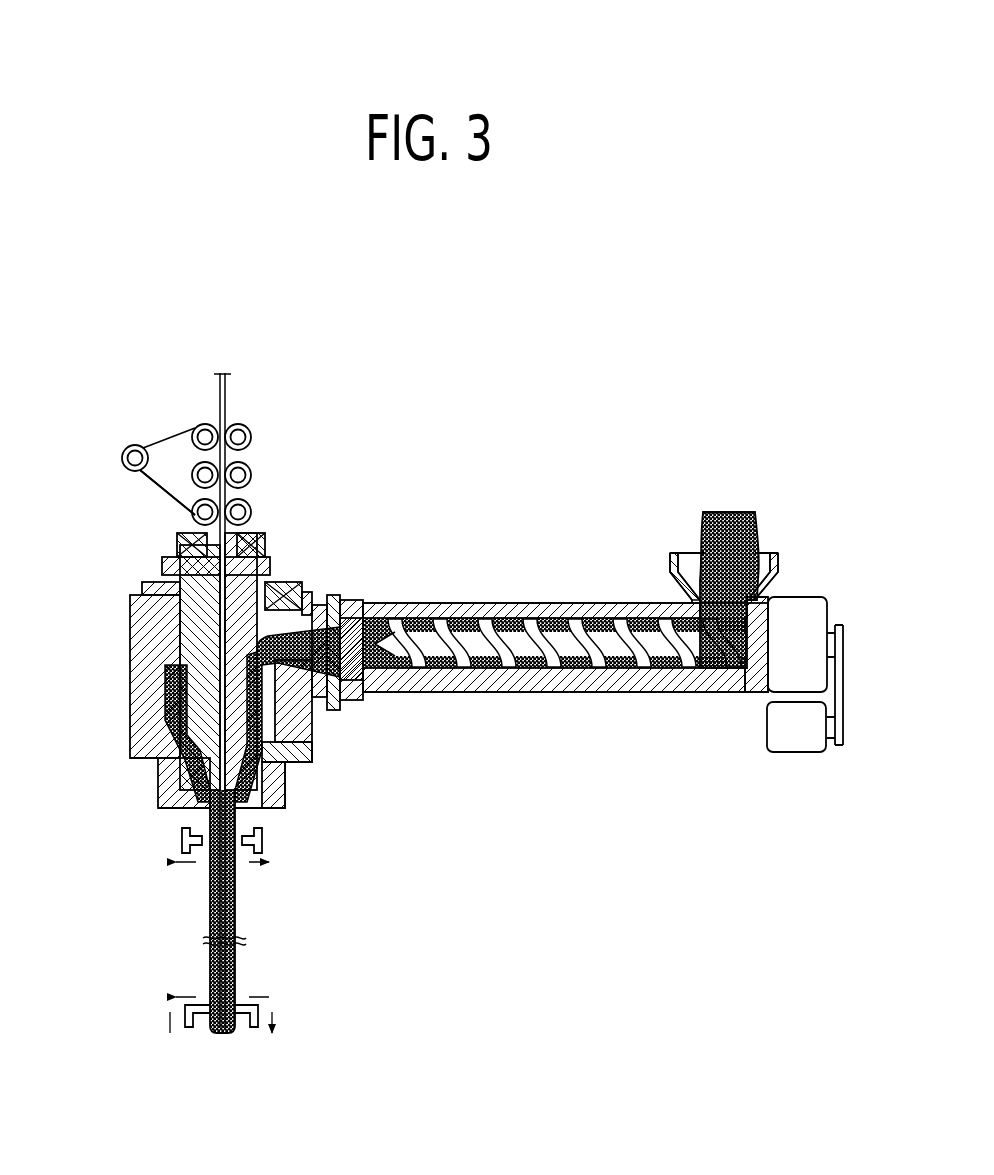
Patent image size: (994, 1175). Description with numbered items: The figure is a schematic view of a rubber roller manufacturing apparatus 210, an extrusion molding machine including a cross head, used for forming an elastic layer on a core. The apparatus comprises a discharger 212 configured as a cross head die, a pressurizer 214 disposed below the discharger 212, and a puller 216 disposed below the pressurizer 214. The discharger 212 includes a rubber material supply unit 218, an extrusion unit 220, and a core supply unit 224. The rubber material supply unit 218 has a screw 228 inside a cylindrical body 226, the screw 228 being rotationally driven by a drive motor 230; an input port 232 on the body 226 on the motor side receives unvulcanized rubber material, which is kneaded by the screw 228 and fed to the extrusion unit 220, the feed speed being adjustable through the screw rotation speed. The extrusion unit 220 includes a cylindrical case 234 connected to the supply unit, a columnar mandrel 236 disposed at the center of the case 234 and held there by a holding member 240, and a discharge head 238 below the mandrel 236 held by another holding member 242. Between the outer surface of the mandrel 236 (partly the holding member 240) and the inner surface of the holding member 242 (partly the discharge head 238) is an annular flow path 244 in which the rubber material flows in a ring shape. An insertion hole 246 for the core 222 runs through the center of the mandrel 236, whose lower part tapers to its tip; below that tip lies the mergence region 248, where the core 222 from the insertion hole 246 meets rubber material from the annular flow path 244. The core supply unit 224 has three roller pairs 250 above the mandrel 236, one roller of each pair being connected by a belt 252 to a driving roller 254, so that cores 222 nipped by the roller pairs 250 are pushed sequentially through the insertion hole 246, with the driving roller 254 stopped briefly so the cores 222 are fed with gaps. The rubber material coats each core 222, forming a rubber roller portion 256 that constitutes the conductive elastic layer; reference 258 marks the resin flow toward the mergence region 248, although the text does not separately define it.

The rubber roller manufacturing apparatus 210 is at (436, 440).
The discharger 212 is at (118, 686).
The pressurizer 214 is at (168, 843).
The puller 216 is at (145, 1024).
The rubber material supply unit 218 is at (515, 588).
The extrusion unit 220 is at (296, 789).
The core 222 is at (227, 396).
The core supply unit 224 is at (209, 423).
The body 226 is at (571, 612).
The screw 228 is at (616, 632).
The drive motor 230 is at (800, 745).
The input port 232 is at (697, 560).
The case 234 is at (312, 605).
The mandrel 236 is at (303, 597).
The discharge head 238 is at (256, 800).
The holding member 240 is at (297, 582).
The holding member 242 is at (268, 777).
The annular flow path 244 is at (288, 742).
The insertion hole 246 is at (256, 548).
The mergence region 248 is at (206, 789).
The roller pairs 250 is at (252, 508).
The belt 252 is at (164, 496).
The driving roller 254 is at (128, 468).
The rubber roller portion 256 is at (196, 924).
The resin flow path 258 is at (196, 801).